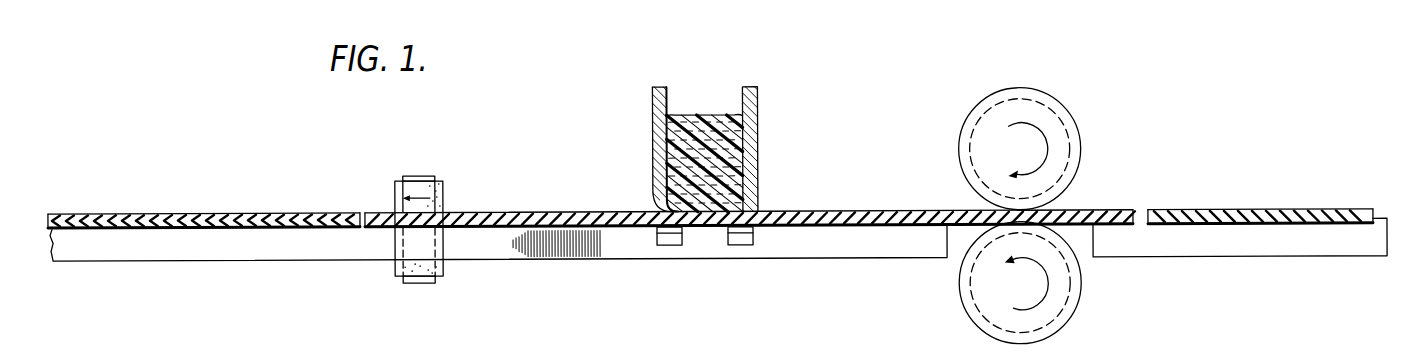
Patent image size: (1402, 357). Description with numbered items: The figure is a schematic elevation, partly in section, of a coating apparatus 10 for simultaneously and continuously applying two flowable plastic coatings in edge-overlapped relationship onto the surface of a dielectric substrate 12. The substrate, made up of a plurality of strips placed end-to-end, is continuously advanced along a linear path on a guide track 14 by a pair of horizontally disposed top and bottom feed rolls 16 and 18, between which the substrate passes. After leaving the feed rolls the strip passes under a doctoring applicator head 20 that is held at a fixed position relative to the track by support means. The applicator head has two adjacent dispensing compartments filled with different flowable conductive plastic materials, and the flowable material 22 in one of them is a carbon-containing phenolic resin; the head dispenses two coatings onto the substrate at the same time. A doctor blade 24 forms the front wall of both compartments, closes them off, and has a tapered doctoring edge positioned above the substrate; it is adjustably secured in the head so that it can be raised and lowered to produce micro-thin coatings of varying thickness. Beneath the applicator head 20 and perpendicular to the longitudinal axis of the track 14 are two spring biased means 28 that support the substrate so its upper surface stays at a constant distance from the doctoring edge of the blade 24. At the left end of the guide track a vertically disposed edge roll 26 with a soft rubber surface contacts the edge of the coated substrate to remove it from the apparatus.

The coating apparatus 10 is at (1113, 120).
The dielectric substrate 12 is at (1178, 211).
The guide track 14 is at (823, 247).
The top feed roll 16 is at (1052, 103).
The bottom feed roll 18 is at (1066, 315).
The doctoring applicator head 20 is at (758, 112).
The flowable material 22 is at (705, 116).
The doctor blade 24 is at (653, 112).
The edge roll 26 is at (415, 191).
The spring biased means 28 is at (740, 245).